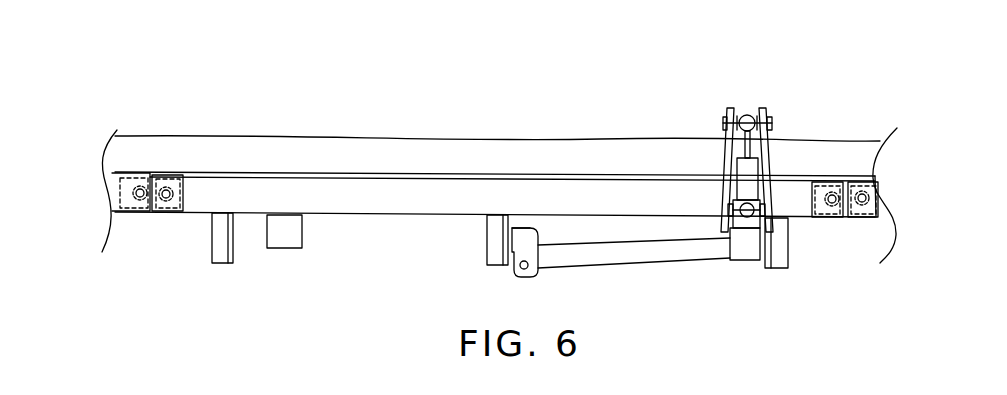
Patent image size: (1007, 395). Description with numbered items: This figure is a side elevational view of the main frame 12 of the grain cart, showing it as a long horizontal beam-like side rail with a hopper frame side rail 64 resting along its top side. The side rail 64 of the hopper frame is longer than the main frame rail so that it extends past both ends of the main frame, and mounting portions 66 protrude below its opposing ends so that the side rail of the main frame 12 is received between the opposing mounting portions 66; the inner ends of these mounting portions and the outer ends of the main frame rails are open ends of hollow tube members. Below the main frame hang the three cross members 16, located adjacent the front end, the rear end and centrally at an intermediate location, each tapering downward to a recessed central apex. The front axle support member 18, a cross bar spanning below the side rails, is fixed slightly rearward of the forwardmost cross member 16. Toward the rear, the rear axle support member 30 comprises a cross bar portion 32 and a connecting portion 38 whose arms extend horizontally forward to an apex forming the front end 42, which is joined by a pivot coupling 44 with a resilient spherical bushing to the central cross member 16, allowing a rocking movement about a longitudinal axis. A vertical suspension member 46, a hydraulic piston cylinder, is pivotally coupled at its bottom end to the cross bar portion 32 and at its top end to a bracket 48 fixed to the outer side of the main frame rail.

The main frame 12 is at (412, 222).
The cross members 16 is at (223, 243).
The front axle support member 18 is at (290, 250).
The rear axle support member 30 is at (668, 278).
The cross bar portion 32 is at (747, 253).
The connecting portion 38 is at (597, 260).
The front end 42 is at (545, 233).
The pivot coupling 44 is at (522, 277).
The suspension members 46 is at (753, 178).
The brackets 48 is at (722, 162).
The side rails 64 is at (308, 150).
The mounting portions 66 is at (128, 211).